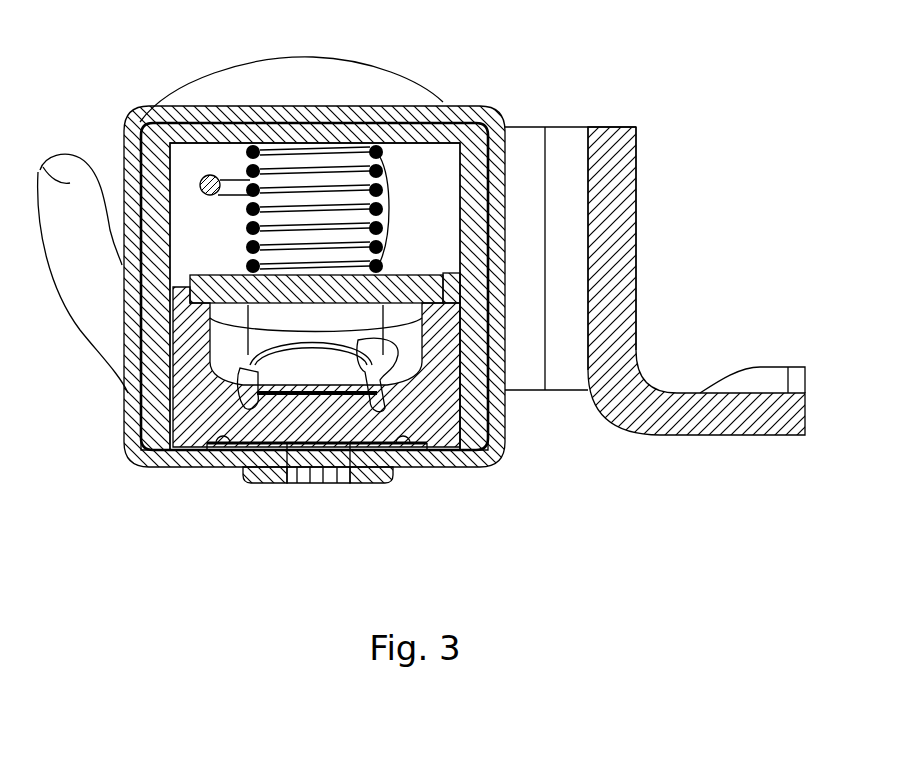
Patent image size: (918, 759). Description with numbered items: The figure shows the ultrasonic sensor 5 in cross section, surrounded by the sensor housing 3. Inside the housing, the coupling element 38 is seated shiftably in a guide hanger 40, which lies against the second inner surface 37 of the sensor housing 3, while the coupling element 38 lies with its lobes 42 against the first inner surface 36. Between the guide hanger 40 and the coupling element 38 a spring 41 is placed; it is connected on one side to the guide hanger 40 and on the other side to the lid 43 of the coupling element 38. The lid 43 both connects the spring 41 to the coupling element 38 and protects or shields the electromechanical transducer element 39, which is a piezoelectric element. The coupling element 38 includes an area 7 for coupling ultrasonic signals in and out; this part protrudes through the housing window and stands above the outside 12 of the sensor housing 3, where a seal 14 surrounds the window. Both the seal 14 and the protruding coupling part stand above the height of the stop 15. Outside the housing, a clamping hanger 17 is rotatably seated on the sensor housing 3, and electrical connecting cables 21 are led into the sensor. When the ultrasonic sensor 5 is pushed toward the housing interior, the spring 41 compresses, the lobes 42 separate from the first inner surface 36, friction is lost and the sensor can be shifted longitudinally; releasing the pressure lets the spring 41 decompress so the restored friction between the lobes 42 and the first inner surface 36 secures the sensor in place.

The sensor housing 3 is at (147, 120).
The ultrasonic sensor 5 is at (512, 167).
The area for coupling ultrasonic signals in and out 7 is at (320, 483).
The outside of the sensor housing 12 is at (433, 453).
The seal 14 is at (390, 477).
The stop 15 is at (177, 477).
The clamping hanger 17 is at (45, 165).
The electrical connecting cables 21 is at (212, 175).
The first inner surface of the sensor housing 36 is at (233, 450).
The second inner surface of the sensor housing 37 is at (252, 152).
The coupling element 38 is at (470, 400).
The electromechanical transducer element 39 is at (287, 445).
The guide hanger 40 is at (482, 157).
The spring 41 is at (378, 157).
The lobes 42 is at (203, 450).
The lid of the coupling element 43 is at (180, 322).